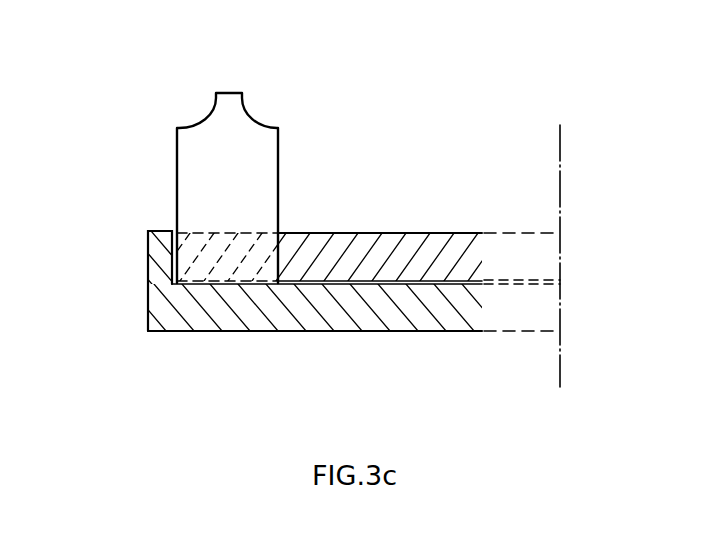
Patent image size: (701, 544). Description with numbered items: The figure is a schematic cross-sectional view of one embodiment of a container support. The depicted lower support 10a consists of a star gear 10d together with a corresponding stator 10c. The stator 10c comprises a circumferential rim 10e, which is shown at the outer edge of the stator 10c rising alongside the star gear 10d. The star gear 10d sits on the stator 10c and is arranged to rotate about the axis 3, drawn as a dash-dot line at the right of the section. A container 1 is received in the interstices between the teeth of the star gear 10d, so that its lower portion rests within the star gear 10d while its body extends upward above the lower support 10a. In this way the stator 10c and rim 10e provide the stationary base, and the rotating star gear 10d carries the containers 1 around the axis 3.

The container 1 is at (279, 177).
The axis 3 is at (562, 146).
The lower support 10a is at (280, 286).
The stator 10c is at (344, 333).
The star gear 10d is at (417, 245).
The circumferential rim 10e is at (160, 244).